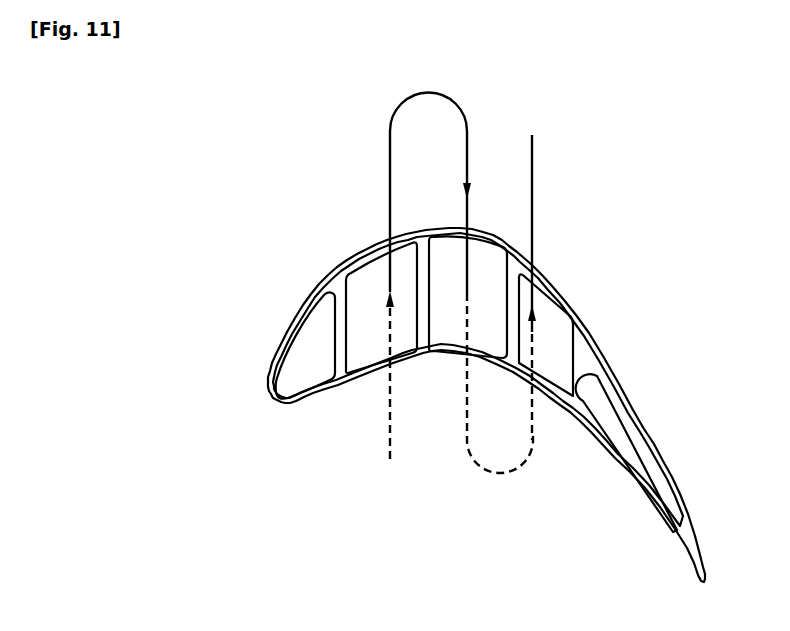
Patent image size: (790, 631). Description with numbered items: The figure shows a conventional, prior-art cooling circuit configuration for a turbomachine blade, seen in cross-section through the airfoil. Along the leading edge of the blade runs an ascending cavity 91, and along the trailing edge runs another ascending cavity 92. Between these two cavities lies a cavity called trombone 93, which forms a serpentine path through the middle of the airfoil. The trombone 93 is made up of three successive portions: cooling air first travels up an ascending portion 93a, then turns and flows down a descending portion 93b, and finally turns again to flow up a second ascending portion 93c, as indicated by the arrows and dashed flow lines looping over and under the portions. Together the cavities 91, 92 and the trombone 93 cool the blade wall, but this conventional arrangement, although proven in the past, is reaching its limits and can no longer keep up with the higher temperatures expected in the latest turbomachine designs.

The ascending cavity along the leading edge 91 is at (298, 375).
The ascending cavity along the trailing edge 92 is at (622, 442).
The trombone cavity 93 is at (581, 492).
The ascending portion 93a is at (368, 347).
The descending portion 93b is at (445, 340).
The ascending portion 93c is at (550, 373).